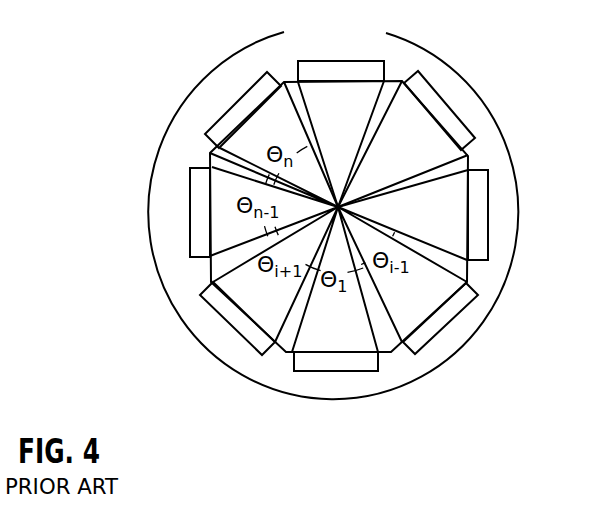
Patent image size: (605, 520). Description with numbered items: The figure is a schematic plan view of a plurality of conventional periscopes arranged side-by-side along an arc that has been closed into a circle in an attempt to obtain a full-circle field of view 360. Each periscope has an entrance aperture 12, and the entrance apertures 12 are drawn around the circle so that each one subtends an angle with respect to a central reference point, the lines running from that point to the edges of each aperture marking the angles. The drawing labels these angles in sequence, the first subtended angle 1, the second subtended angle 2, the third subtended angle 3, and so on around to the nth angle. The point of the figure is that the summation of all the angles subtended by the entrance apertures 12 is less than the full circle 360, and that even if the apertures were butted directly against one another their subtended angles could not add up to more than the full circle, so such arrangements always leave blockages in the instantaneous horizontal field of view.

The entrance apertures 12 is at (358, 61).
The full circle (360 degrees) 360 is at (316, 27).
The first sector angle theta- 1 is at (363, 150).
The second sector angle theta- 2 is at (372, 146).
The third sector angle theta- 3 is at (401, 188).